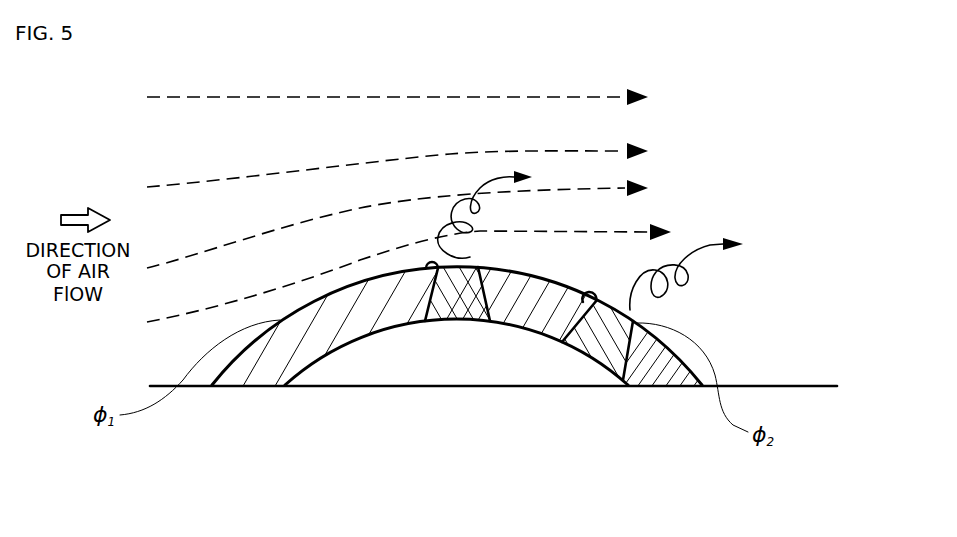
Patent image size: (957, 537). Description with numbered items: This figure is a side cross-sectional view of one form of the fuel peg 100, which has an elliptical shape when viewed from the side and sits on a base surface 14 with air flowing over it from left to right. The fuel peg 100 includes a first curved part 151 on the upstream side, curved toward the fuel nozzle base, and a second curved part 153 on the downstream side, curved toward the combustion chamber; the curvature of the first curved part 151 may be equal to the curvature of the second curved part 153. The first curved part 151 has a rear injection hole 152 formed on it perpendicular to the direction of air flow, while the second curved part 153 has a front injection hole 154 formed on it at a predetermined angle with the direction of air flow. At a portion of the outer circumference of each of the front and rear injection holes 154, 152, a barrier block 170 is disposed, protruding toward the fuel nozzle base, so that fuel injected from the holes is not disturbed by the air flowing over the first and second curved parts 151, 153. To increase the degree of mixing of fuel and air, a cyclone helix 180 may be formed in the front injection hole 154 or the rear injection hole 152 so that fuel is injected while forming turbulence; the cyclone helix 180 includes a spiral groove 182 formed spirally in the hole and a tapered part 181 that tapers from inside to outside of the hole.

The base surface / wall 14 is at (802, 405).
The fuel peg 100 is at (347, 365).
The first curved part 151 is at (318, 338).
The rear injection hole 152 is at (445, 322).
The second curved part 153 is at (658, 367).
The front injection hole 154 is at (562, 325).
The barrier block 170 is at (436, 266).
The cyclone helix 180 is at (592, 390).
The tapered part 181 is at (627, 388).
The spiral groove 182 is at (590, 337).